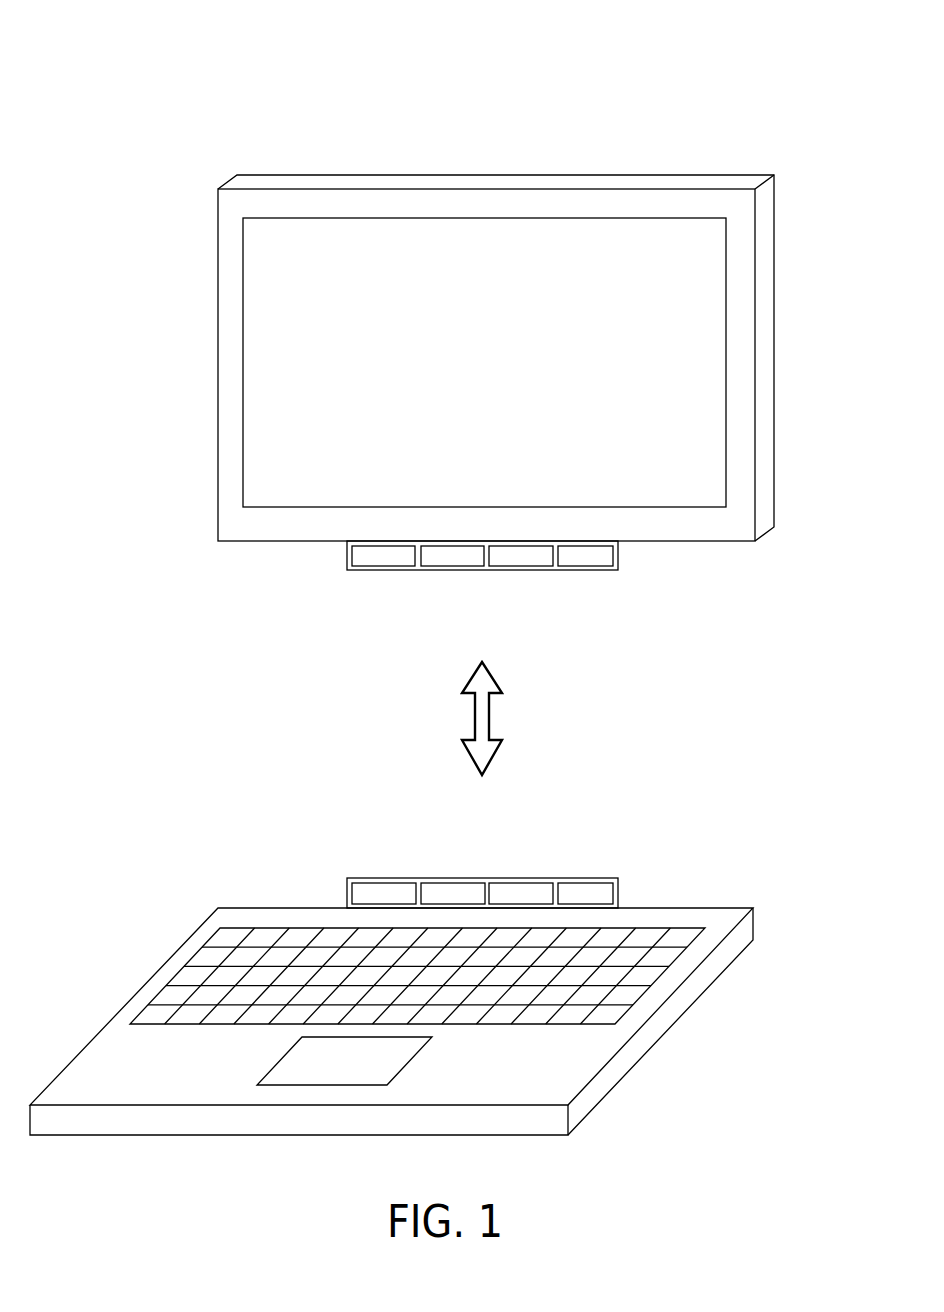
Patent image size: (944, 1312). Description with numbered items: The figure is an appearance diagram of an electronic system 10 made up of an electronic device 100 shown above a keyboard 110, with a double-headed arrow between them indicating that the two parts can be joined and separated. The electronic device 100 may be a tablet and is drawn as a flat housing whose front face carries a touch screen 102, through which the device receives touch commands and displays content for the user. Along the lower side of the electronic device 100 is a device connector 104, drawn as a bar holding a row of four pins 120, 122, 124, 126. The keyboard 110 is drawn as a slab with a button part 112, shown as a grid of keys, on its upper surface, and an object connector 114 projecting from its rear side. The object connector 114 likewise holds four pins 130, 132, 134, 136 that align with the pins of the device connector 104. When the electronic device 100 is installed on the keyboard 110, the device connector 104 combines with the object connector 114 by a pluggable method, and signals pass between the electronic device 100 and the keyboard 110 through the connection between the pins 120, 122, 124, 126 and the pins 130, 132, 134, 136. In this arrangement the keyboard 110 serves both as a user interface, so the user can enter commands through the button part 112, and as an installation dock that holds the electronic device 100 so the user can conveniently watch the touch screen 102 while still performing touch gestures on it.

The electronic system 10 is at (758, 84).
The electronic device 100 is at (775, 218).
The touch screen 102 is at (703, 292).
The device connector 104 is at (347, 556).
The keyboard 110 is at (729, 908).
The button part 112 is at (652, 973).
The object connector 114 is at (347, 897).
The pin 120 is at (371, 560).
The pin 122 is at (453, 560).
The pin 124 is at (523, 560).
The pin 126 is at (594, 560).
The pin 130 is at (380, 895).
The pin 132 is at (463, 895).
The pin 134 is at (533, 895).
The pin 136 is at (604, 895).